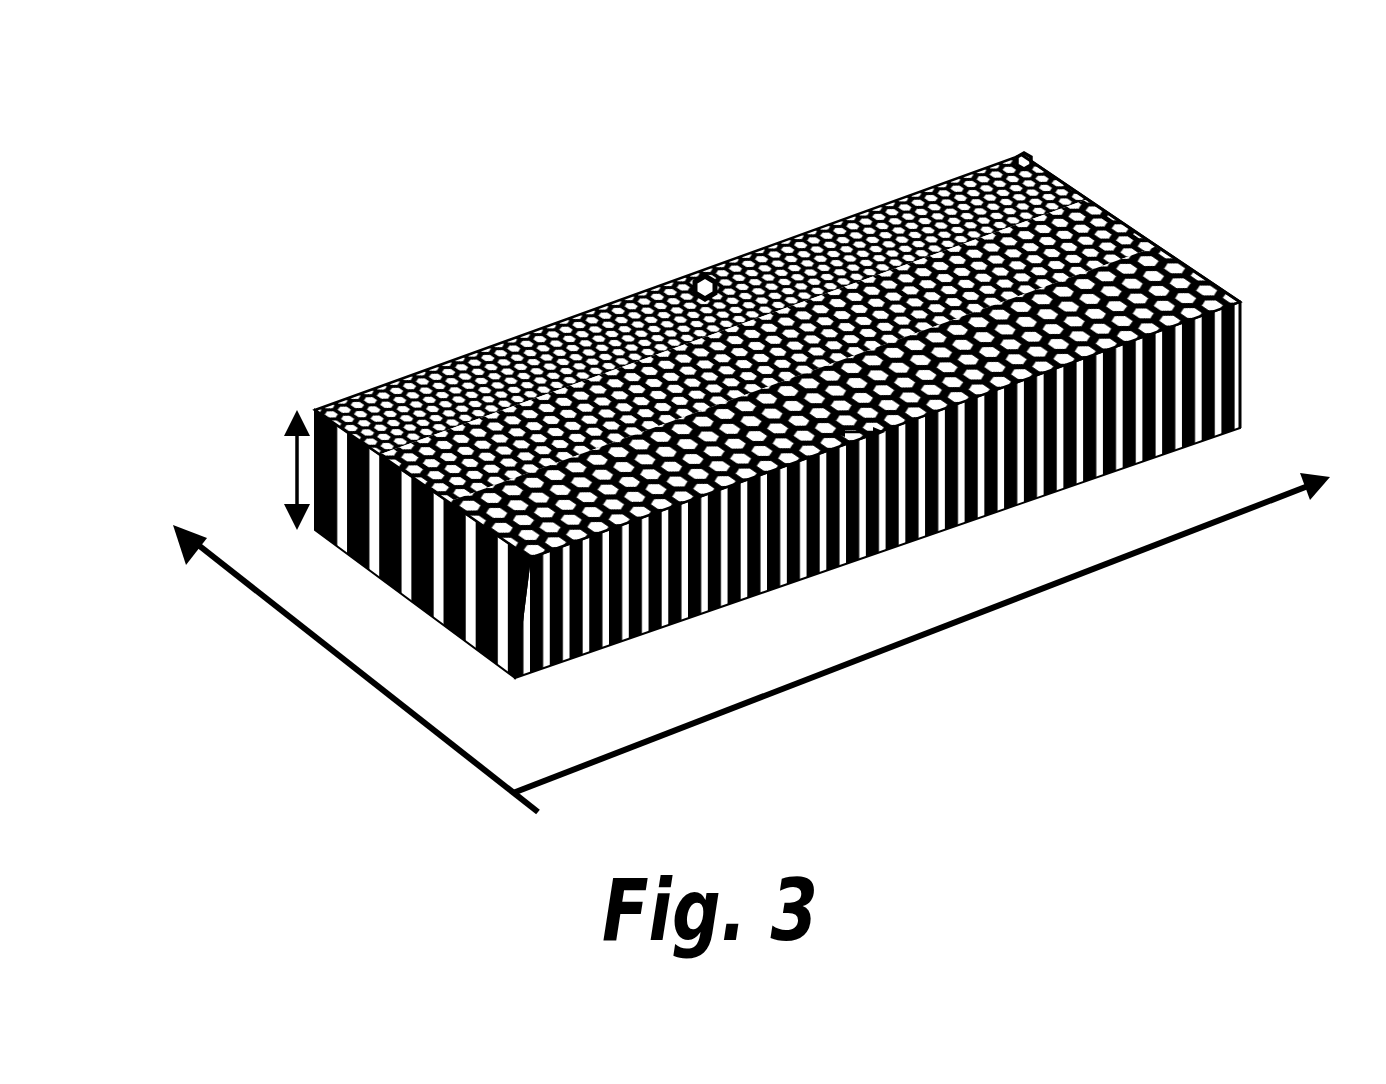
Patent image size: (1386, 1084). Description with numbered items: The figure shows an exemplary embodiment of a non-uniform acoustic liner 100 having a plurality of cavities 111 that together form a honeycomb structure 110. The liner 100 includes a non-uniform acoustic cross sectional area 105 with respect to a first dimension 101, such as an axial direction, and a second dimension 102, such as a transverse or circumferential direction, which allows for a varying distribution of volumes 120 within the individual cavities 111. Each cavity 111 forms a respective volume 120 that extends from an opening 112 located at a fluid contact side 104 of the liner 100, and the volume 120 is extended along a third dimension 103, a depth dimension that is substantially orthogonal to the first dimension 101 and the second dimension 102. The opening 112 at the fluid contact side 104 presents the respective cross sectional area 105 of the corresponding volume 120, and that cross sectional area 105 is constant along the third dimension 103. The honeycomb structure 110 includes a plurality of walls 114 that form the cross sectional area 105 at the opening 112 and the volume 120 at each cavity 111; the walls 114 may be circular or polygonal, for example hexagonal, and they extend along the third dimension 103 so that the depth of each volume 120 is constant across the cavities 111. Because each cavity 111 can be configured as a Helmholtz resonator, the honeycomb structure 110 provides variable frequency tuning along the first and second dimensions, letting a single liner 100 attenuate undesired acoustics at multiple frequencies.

The liner 100 is at (818, 388).
The first dimension 101 is at (822, 674).
The second dimension 102 is at (326, 648).
The third dimension 103 is at (223, 455).
The fluid contact side 104 is at (647, 258).
The cross sectional area 105 is at (853, 442).
The honeycomb structure 110 is at (1124, 190).
The cavity 111 is at (695, 275).
The opening 112 is at (1023, 150).
The walls 114 is at (510, 617).
The volume 120 is at (1193, 285).